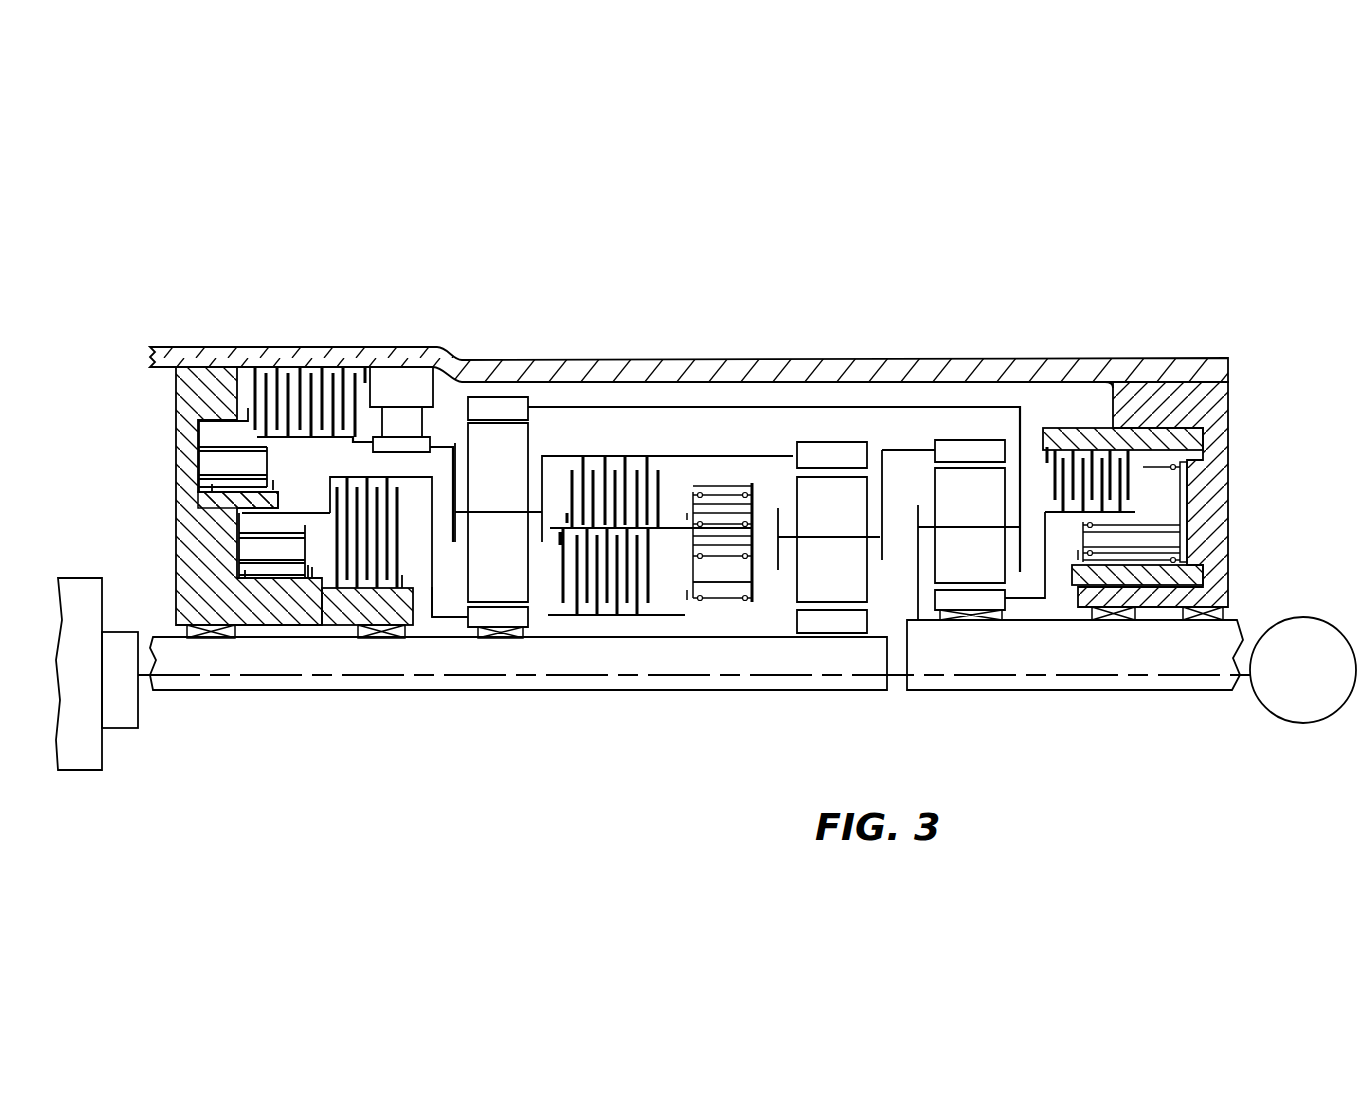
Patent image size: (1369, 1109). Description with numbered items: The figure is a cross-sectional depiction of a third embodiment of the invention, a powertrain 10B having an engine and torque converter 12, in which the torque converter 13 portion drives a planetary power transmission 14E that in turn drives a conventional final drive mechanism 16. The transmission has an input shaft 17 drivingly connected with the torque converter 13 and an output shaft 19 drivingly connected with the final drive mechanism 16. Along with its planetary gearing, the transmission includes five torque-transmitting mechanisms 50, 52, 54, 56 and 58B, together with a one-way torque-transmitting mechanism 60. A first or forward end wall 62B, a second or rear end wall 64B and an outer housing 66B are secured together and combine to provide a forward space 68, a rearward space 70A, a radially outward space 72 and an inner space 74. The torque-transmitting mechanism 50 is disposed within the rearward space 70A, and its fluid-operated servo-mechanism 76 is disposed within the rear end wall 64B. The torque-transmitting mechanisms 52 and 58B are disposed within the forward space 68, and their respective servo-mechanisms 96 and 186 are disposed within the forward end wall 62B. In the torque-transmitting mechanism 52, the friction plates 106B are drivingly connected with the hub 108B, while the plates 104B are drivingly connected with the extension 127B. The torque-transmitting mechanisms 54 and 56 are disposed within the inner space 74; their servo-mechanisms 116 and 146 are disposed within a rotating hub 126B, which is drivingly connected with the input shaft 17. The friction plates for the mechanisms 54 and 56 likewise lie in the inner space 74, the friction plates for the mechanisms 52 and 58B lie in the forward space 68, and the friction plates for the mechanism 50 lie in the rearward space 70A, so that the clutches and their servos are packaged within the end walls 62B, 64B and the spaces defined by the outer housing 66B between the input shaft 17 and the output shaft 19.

The powertrain 10B is at (177, 310).
The engine and torque converter 12 is at (88, 573).
The torque converter 13 is at (138, 627).
The transmission 14E is at (638, 323).
The final drive mechanism 16 is at (1333, 617).
The input shaft 17 is at (195, 668).
The output shaft 19 is at (1170, 657).
The torque-transmitting mechanism 50 is at (1072, 400).
The torque-transmitting mechanism 52 is at (347, 613).
The torque-transmitting mechanism 54 is at (675, 623).
The torque-transmitting mechanism 56 is at (667, 477).
The brake 58B is at (302, 367).
The one-way torque-transmitting mechanism 60 is at (423, 375).
The end wall 62B is at (183, 530).
The end wall 64B is at (1223, 430).
The transmission housing 66B is at (810, 372).
The forward space 68 is at (308, 458).
The housing fillet 70A is at (1110, 388).
The radially outward space 72 is at (725, 397).
The inner space 74 is at (650, 620).
The servo-mechanism 76 is at (1187, 510).
The servo-mechanism 96 is at (230, 557).
The friction plates 104B is at (345, 560).
The friction plates 106B is at (397, 547).
The hub 108B is at (432, 587).
The servo-mechanism 116 is at (723, 610).
The rotating hub 126B is at (757, 590).
The extension 127B is at (375, 627).
The servo-mechanism 146 is at (747, 470).
The servo-mechanism 186 is at (193, 445).